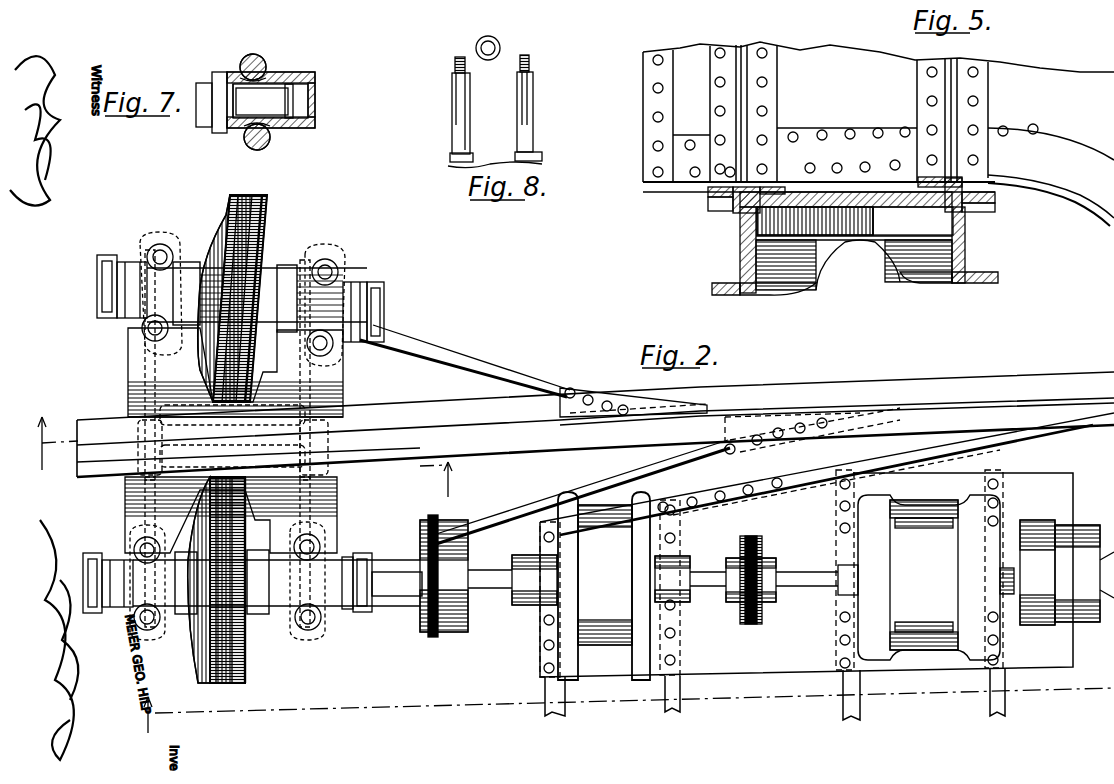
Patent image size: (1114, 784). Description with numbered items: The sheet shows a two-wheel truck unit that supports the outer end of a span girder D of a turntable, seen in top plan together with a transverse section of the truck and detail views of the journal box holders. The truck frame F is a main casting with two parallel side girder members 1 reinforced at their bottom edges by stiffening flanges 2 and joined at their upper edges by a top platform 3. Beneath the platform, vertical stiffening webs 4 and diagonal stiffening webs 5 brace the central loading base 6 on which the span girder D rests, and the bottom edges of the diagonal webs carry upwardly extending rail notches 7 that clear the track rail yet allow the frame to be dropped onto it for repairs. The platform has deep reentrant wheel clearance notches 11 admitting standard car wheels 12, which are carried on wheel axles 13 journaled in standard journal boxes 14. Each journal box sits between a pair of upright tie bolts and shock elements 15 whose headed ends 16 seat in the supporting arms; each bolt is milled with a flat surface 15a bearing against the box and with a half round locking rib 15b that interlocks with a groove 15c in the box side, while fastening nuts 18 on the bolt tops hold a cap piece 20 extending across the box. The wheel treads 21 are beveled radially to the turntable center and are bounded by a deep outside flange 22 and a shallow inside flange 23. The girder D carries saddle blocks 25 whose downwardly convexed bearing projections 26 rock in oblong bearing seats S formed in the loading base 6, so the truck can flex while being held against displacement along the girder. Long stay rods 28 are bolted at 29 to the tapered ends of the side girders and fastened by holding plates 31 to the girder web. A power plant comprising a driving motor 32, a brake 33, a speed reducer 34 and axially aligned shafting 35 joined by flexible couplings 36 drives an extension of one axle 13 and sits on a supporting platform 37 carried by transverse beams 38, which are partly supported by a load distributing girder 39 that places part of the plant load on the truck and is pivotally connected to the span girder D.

In FIG. 5, the side girder member 1 is at (738, 252).
In FIG. 2, the side girder member 1 is at (337, 478).
In FIG. 5, the stiffening flange 2 is at (712, 292).
In FIG. 2, the stiffening flange 2 is at (620, 710).
In FIG. 5, the top platform 3 is at (846, 213).
In FIG. 5, the vertical stiffening web 4 is at (815, 221).
In FIG. 5, the diagonal stiffening web 5 is at (738, 220).
In FIG. 2, the diagonal stiffening web 5 is at (243, 457).
In FIG. 5, the loading base 6 is at (706, 203).
In FIG. 5, the rail notch 7 is at (862, 246).
In FIG. 2, the wheel clearance notch 11 is at (282, 373).
In FIG. 2, the wheel 12 is at (264, 232).
In FIG. 7, the wheel axle 13 is at (208, 118).
In FIG. 7, the journal box 14 is at (300, 128).
In FIG. 2, the journal box 14 is at (350, 290).
In FIG. 7, the tie bolt and shock element 15 is at (246, 60).
In FIG. 8, the tie bolt and shock element 15 is at (480, 50).
In FIG. 8, the flat surface 15a is at (492, 55).
In FIG. 7, the locking rib 15b is at (243, 140).
In FIG. 8, the locking rib 15b is at (486, 56).
In FIG. 7, the groove 15c is at (275, 78).
In FIG. 7, the headed end 16 is at (262, 68).
In FIG. 8, the headed end 16 is at (500, 45).
In FIG. 2, the fastening nut 18 is at (150, 250).
In FIG. 2, the cap piece 20 is at (105, 262).
In FIG. 2, the tread portion 21 is at (250, 255).
In FIG. 2, the outside flange 22 is at (228, 205).
In FIG. 2, the inside flange 23 is at (262, 200).
In FIG. 5, the saddle block 25 is at (780, 188).
In FIG. 2, the saddle block 25 is at (138, 462).
In FIG. 5, the bearing projection 26 is at (740, 192).
In FIG. 2, the stay rod 28 is at (466, 365).
In FIG. 2, the bolted connection 29 is at (603, 395).
In FIG. 2, the holding plate 31 is at (668, 394).
In FIG. 2, the driving motor 32 is at (926, 577).
In FIG. 2, the brake 33 is at (1067, 572).
In FIG. 2, the speed reducer 34 is at (526, 575).
In FIG. 2, the shafting 35 is at (705, 570).
In FIG. 2, the flexible shafting coupling 36 is at (762, 545).
In FIG. 2, the supporting platform 37 is at (806, 573).
In FIG. 2, the transverse beam 38 is at (545, 688).
In FIG. 2, the load distributing girder 39 is at (488, 540).
In FIG. 2, the span girder D is at (595, 424).
In FIG. 2, the truck frame F is at (345, 372).
In FIG. 2, the bearing seat S is at (130, 430).